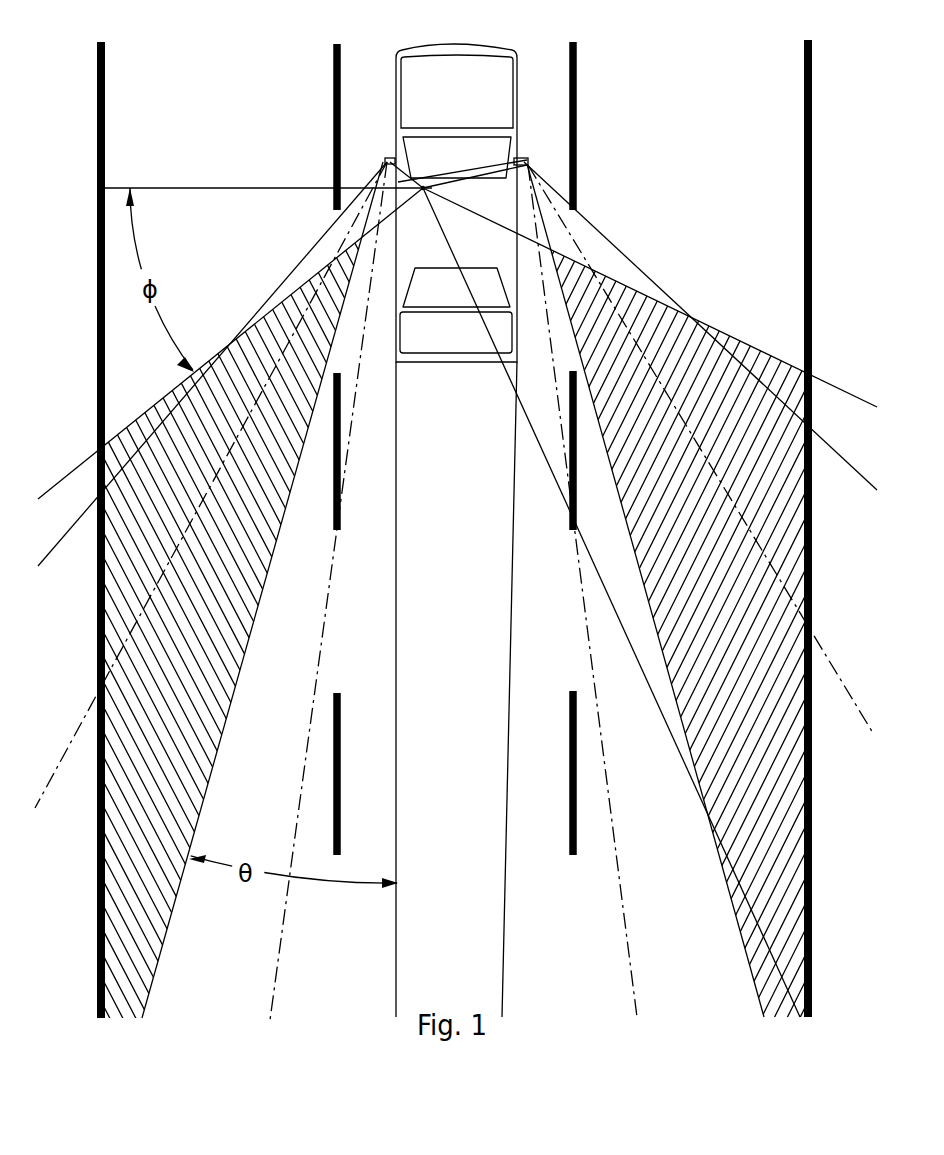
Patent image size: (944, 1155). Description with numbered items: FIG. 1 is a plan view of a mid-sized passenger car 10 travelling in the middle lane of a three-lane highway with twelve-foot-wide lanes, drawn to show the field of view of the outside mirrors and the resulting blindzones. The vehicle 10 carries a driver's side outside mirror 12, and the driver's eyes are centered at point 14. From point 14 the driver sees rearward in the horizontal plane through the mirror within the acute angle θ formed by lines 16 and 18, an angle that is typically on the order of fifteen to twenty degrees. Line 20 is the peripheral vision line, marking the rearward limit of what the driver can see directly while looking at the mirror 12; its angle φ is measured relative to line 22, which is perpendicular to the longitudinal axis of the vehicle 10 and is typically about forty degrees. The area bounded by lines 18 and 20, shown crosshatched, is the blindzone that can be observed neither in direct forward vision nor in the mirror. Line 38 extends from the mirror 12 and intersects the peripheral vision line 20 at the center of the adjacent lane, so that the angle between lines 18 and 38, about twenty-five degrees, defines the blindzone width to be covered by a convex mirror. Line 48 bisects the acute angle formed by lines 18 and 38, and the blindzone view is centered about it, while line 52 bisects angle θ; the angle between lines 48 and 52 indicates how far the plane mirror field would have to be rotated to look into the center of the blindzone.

The passenger car 10 is at (518, 78).
The driver's side outside mirror 12 is at (390, 157).
The driver's eye point 14 is at (423, 192).
The field of view line 16 is at (400, 513).
The field of view line 18 is at (243, 657).
The peripheral vision line 20 is at (68, 475).
The transverse reference line 22 is at (199, 188).
The blindzone boundary line 38 is at (55, 548).
The blindzone bisector line 48 is at (58, 768).
The field of view bisector line 52 is at (302, 785).